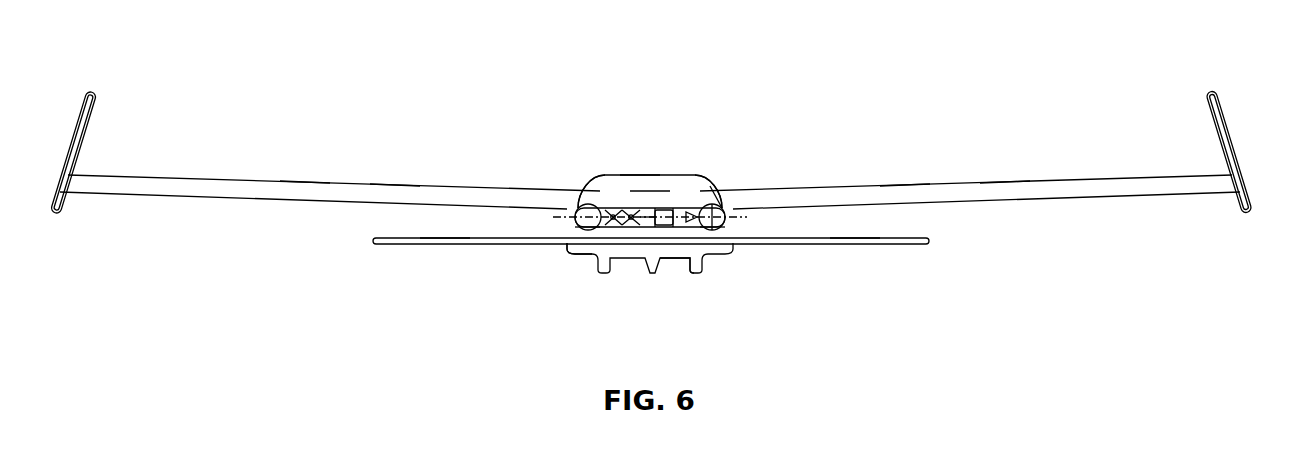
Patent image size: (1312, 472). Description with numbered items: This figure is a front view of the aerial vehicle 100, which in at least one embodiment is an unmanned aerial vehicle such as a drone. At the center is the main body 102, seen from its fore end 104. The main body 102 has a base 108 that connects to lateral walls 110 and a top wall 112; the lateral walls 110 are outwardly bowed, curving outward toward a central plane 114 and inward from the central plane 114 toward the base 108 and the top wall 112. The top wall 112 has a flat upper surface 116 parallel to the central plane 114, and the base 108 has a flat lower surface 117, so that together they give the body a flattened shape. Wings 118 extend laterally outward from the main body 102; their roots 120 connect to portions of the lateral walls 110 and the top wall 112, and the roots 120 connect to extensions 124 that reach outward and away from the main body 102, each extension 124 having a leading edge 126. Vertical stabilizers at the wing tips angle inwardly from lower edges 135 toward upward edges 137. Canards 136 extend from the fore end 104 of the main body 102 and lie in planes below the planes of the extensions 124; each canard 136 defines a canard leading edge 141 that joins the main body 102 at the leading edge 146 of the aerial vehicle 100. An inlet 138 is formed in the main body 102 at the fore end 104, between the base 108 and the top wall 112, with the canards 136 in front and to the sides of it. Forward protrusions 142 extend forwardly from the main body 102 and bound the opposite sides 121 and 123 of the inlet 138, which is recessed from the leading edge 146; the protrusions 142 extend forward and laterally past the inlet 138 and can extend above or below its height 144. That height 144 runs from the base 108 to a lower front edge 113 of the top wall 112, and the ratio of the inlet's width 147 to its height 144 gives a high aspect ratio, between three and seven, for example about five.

The aerial vehicle 100 is at (314, 36).
The main body 102 is at (665, 178).
The fore end 104 is at (700, 185).
The base 108 is at (626, 260).
The lateral walls 110 is at (578, 228).
The top wall 112 is at (623, 178).
The lower front edge 113 is at (607, 195).
The central plane 114 is at (716, 228).
The flat upper surface 116 is at (645, 178).
The flat lower surface 117 is at (677, 261).
The wings 118 is at (205, 180).
The roots 120 is at (597, 205).
The opposite side 121 is at (588, 190).
The opposite side 123 is at (728, 200).
The extensions 124 is at (295, 183).
The leading edges 126 is at (382, 197).
The lower edges 135 is at (55, 214).
The canards 136 is at (427, 245).
The upward edges 137 is at (93, 93).
The inlet 138 is at (678, 185).
The canard leading edge 141 is at (448, 240).
The forward protrusions 142 is at (565, 205).
The height 144 is at (708, 228).
The leading edge 146 is at (573, 250).
The width 147 is at (660, 222).